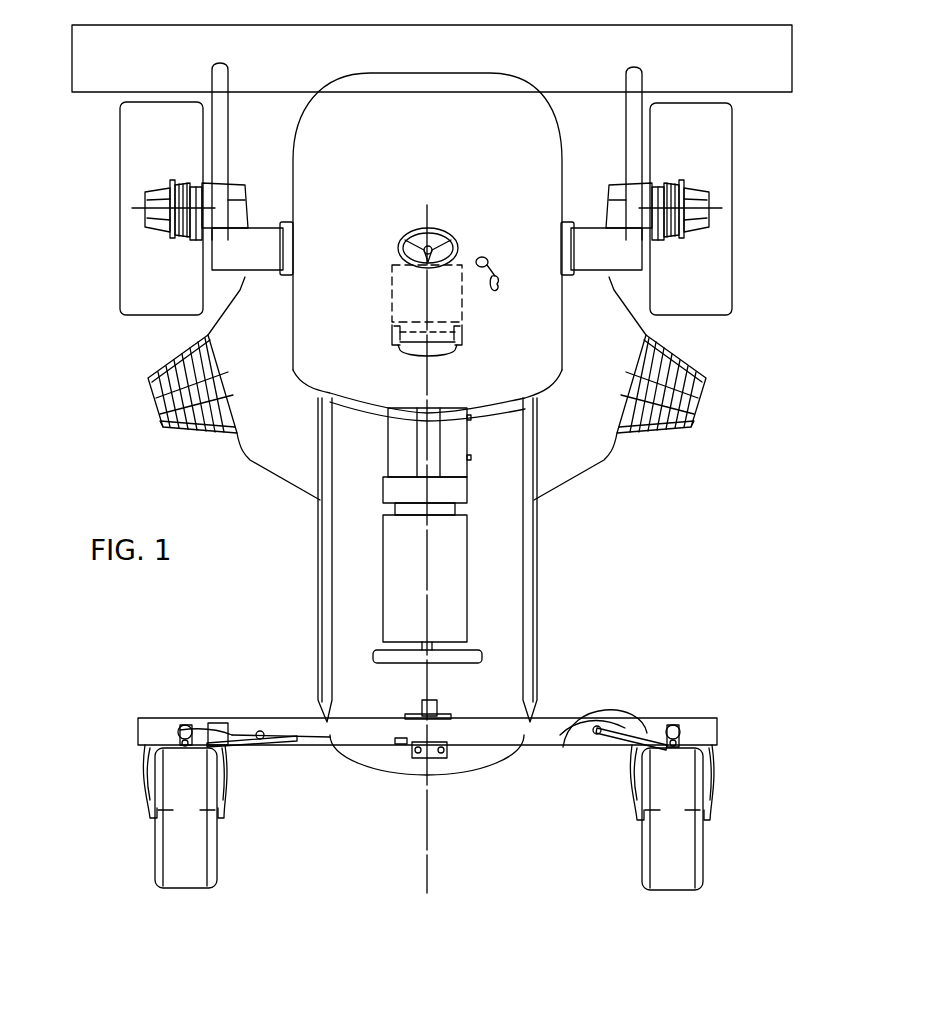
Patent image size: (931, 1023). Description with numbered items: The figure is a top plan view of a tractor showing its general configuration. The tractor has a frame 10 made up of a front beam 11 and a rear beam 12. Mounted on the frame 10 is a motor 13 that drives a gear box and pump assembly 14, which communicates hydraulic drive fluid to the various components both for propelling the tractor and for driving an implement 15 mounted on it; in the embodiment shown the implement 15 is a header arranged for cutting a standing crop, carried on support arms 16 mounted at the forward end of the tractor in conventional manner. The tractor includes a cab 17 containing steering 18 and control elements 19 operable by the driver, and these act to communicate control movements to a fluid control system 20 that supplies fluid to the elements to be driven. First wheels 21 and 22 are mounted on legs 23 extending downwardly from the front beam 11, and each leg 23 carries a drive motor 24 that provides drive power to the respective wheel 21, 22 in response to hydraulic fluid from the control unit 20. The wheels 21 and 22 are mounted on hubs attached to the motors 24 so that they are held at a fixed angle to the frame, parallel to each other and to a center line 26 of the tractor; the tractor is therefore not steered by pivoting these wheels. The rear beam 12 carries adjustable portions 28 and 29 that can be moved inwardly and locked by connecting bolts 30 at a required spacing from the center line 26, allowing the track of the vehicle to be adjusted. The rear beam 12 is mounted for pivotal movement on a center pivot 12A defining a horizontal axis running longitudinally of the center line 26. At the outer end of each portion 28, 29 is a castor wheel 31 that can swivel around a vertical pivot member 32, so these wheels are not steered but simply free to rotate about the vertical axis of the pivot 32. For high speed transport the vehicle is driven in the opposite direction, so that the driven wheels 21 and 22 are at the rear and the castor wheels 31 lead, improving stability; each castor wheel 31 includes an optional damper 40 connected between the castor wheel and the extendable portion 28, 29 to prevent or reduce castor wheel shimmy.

The frame 10 is at (545, 591).
The front beam 11 is at (258, 253).
The rear beam 12 is at (480, 735).
The center pivot 12A is at (447, 757).
The motor 13 is at (450, 574).
The gear box and pump assembly 14 is at (458, 492).
The implement 15 is at (572, 108).
The support arms 16 is at (637, 80).
The cab 17 is at (468, 118).
The steering 18 is at (448, 235).
The control elements 19 is at (498, 297).
The fluid control system 20 is at (450, 425).
The first wheel 21 is at (130, 283).
The first wheel 22 is at (720, 270).
The legs 23 is at (243, 195).
The drive motor 24 is at (150, 195).
The center line 26 is at (425, 222).
The adjustable portion 28 is at (220, 733).
The adjustable portion 29 is at (565, 740).
The connecting bolts 30 is at (232, 740).
The castor wheel 31 is at (175, 702).
The vertical pivot member 32 is at (178, 727).
The damper 40 is at (205, 722).